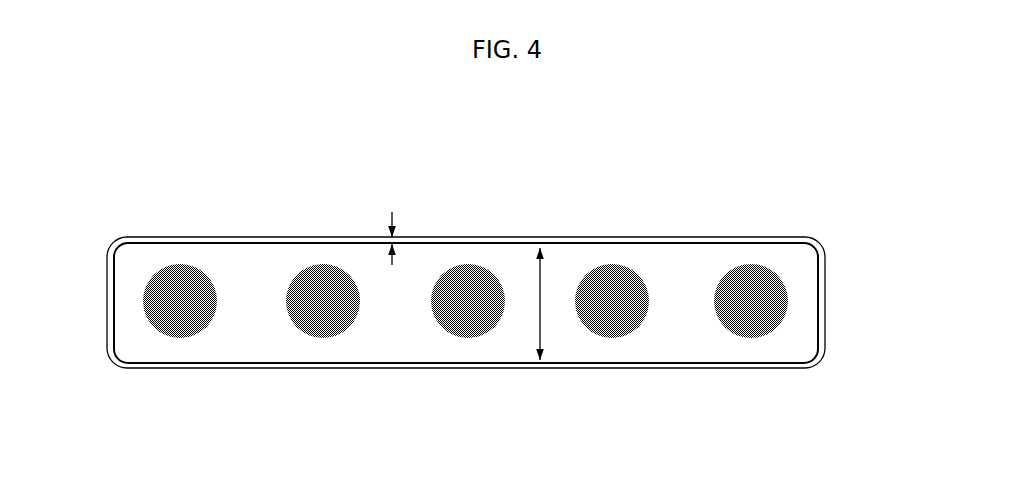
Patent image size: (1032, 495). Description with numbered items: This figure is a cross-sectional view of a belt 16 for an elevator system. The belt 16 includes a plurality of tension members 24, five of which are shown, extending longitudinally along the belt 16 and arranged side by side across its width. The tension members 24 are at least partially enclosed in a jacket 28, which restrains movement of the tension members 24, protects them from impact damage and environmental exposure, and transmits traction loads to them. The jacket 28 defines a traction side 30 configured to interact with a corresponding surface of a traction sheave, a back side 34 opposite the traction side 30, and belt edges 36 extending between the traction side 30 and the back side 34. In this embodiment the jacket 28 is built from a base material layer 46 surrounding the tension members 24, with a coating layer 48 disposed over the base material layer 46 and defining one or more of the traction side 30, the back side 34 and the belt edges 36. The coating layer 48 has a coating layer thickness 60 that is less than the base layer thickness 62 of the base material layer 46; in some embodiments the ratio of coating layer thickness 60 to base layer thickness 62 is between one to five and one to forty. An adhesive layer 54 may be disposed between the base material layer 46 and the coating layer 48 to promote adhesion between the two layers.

The belt 16 is at (318, 205).
The tension members 24 is at (465, 301).
The jacket 28 is at (162, 210).
The traction side 30 is at (758, 365).
The back side 34 is at (697, 237).
The belt edges 36 is at (107, 278).
The base material layer 46 is at (695, 278).
The coating layer 48 is at (612, 237).
The adhesive layer 54 is at (290, 365).
The coating layer thickness 60 is at (395, 230).
The base layer thickness 62 is at (541, 330).